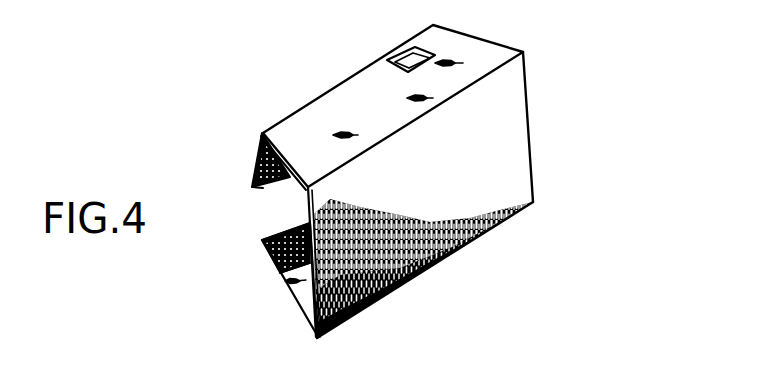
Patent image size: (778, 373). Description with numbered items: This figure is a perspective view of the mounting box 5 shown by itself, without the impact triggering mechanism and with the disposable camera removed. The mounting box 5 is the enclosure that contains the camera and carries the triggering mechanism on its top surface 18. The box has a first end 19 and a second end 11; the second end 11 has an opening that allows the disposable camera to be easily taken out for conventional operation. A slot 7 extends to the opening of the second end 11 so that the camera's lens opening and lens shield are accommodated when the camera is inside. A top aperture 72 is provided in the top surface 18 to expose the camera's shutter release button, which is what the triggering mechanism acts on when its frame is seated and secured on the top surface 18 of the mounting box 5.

The mounting box 5 is at (560, 188).
The slot 7 is at (268, 185).
The second end 11 is at (262, 255).
The top surface 18 is at (297, 128).
The first end 19 is at (527, 90).
The top aperture 72 is at (402, 68).